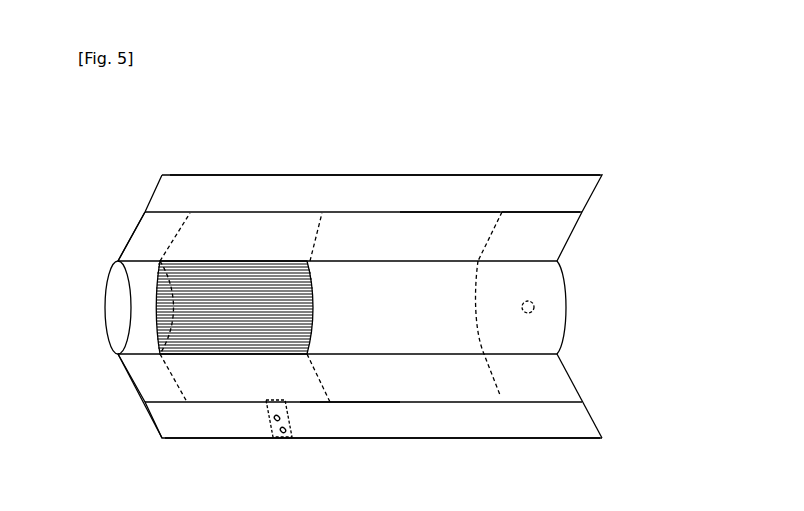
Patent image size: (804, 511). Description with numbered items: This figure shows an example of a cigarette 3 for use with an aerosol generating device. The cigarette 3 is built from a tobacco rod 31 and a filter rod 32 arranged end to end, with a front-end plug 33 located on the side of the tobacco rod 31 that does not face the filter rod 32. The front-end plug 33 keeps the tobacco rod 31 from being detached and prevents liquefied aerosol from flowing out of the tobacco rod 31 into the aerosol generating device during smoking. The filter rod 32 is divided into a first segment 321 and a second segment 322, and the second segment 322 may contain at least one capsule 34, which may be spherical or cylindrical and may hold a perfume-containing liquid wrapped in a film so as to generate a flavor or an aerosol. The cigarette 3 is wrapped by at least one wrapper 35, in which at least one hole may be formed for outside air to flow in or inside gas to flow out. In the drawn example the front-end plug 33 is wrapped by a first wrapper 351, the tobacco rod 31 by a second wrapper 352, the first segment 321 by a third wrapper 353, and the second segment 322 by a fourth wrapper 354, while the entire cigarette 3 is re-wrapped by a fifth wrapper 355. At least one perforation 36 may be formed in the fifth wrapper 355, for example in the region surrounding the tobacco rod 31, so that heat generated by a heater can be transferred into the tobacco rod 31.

The cigarette 3 is at (590, 148).
The tobacco rod 31 is at (233, 272).
The filter rod 32 is at (548, 125).
The first segment 321 is at (443, 283).
The second segment 322 is at (522, 275).
The front-end plug 33 is at (143, 270).
The capsule 34 is at (535, 307).
The wrapper 35 is at (561, 353).
The perforation 36 is at (268, 425).
The first wrapper 351 is at (145, 378).
The second wrapper 352 is at (220, 388).
The third wrapper 353 is at (405, 388).
The fourth wrapper 354 is at (520, 385).
The fifth wrapper 355 is at (347, 422).